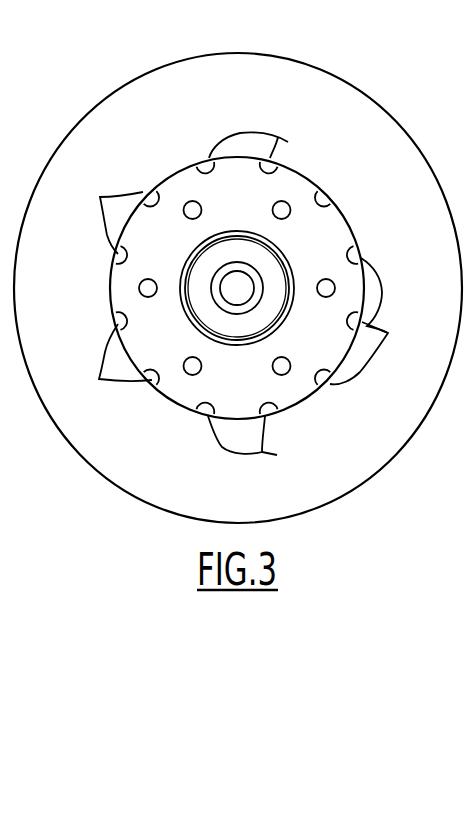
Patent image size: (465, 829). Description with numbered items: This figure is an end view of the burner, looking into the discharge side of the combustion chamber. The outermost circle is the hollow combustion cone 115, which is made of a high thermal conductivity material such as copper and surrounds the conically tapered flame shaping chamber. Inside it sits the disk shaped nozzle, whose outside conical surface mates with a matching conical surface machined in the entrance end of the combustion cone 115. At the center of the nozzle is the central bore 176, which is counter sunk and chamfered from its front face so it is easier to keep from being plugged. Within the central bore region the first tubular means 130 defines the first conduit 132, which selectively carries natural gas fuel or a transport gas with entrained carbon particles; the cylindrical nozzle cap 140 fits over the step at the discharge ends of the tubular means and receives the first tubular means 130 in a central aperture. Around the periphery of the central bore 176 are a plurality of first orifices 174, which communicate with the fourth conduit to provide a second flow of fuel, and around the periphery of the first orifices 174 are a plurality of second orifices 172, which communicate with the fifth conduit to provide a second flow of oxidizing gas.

The combustion cone 115 is at (334, 92).
The first tubular means 130 is at (242, 309).
The first conduit 132 is at (230, 288).
The nozzle cap 140 is at (256, 262).
The second orifices 172 is at (92, 379).
The first orifices 174 is at (150, 279).
The central bore 176 is at (226, 231).